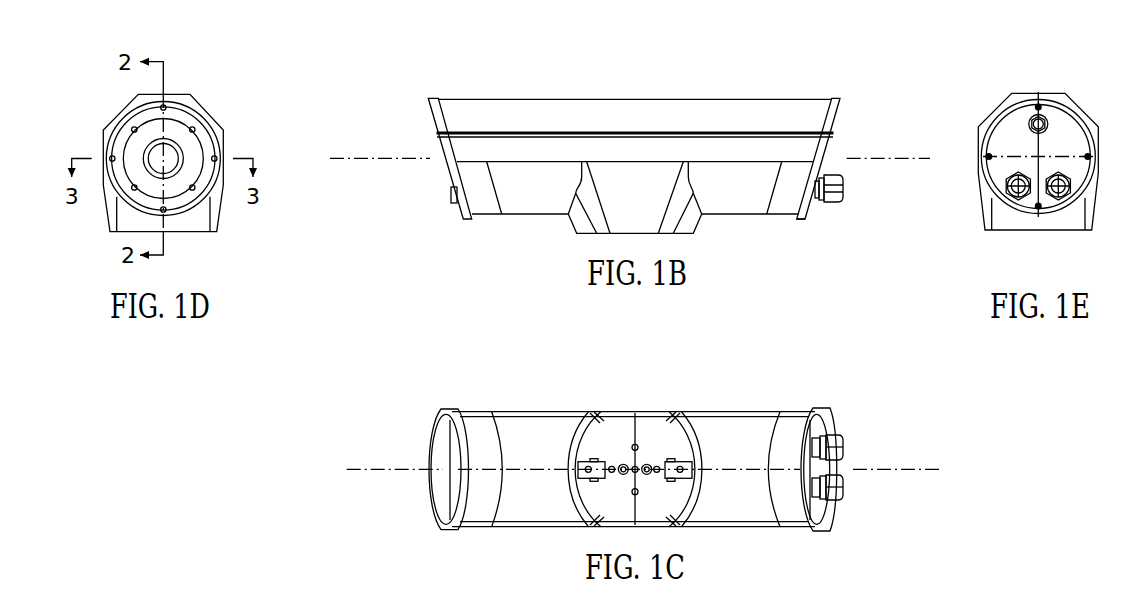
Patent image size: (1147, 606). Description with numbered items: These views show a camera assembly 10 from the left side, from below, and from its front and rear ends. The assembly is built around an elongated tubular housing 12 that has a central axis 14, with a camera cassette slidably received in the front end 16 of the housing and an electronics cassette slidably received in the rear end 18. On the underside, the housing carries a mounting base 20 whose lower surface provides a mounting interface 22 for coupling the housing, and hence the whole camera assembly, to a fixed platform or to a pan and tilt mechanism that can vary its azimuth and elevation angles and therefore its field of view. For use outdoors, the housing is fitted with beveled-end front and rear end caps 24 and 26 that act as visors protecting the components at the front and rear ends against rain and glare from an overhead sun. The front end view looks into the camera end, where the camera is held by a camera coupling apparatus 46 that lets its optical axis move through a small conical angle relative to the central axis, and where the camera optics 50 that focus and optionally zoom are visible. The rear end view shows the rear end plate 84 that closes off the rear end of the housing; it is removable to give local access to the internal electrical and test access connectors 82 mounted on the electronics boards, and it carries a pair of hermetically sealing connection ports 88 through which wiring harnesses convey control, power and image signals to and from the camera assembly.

In FIG. 1D, the camera assembly 10 is at (229, 94).
In FIG. 1B, the camera assembly 10 is at (692, 78).
In FIG. 1C, the camera assembly 10 is at (697, 386).
In FIG. 1E, the camera assembly 10 is at (981, 83).
In FIG. 1D, the housing 12 is at (190, 94).
In FIG. 1B, the housing 12 is at (533, 214).
In FIG. 1C, the housing 12 is at (530, 527).
In FIG. 1E, the housing 12 is at (1012, 93).
In FIG. 1B, the central axis 14 is at (347, 157).
In FIG. 1C, the central axis 14 is at (354, 467).
In FIG. 1D, the front end 16 is at (220, 130).
In FIG. 1B, the front end 16 is at (450, 173).
In FIG. 1C, the front end 16 is at (430, 508).
In FIG. 1B, the rear end 18 is at (808, 216).
In FIG. 1C, the rear end 18 is at (830, 513).
In FIG. 1E, the rear end 18 is at (1073, 108).
In FIG. 1B, the mounting base 20 is at (657, 217).
In FIG. 1C, the mounting interface 22 is at (620, 425).
In FIG. 1B, the front end cap 24 is at (431, 106).
In FIG. 1C, the front end cap 24 is at (446, 408).
In FIG. 1B, the rear end cap 26 is at (838, 98).
In FIG. 1C, the rear end cap 26 is at (820, 403).
In FIG. 1D, the camera coupling apparatus 46 is at (188, 180).
In FIG. 1D, the optics 50 is at (157, 163).
In FIG. 1B, the connectors 82 is at (845, 195).
In FIG. 1C, the connectors 82 is at (845, 445).
In FIG. 1E, the rear end plate 84 is at (997, 170).
In FIG. 1E, the connection ports 88 is at (1012, 197).